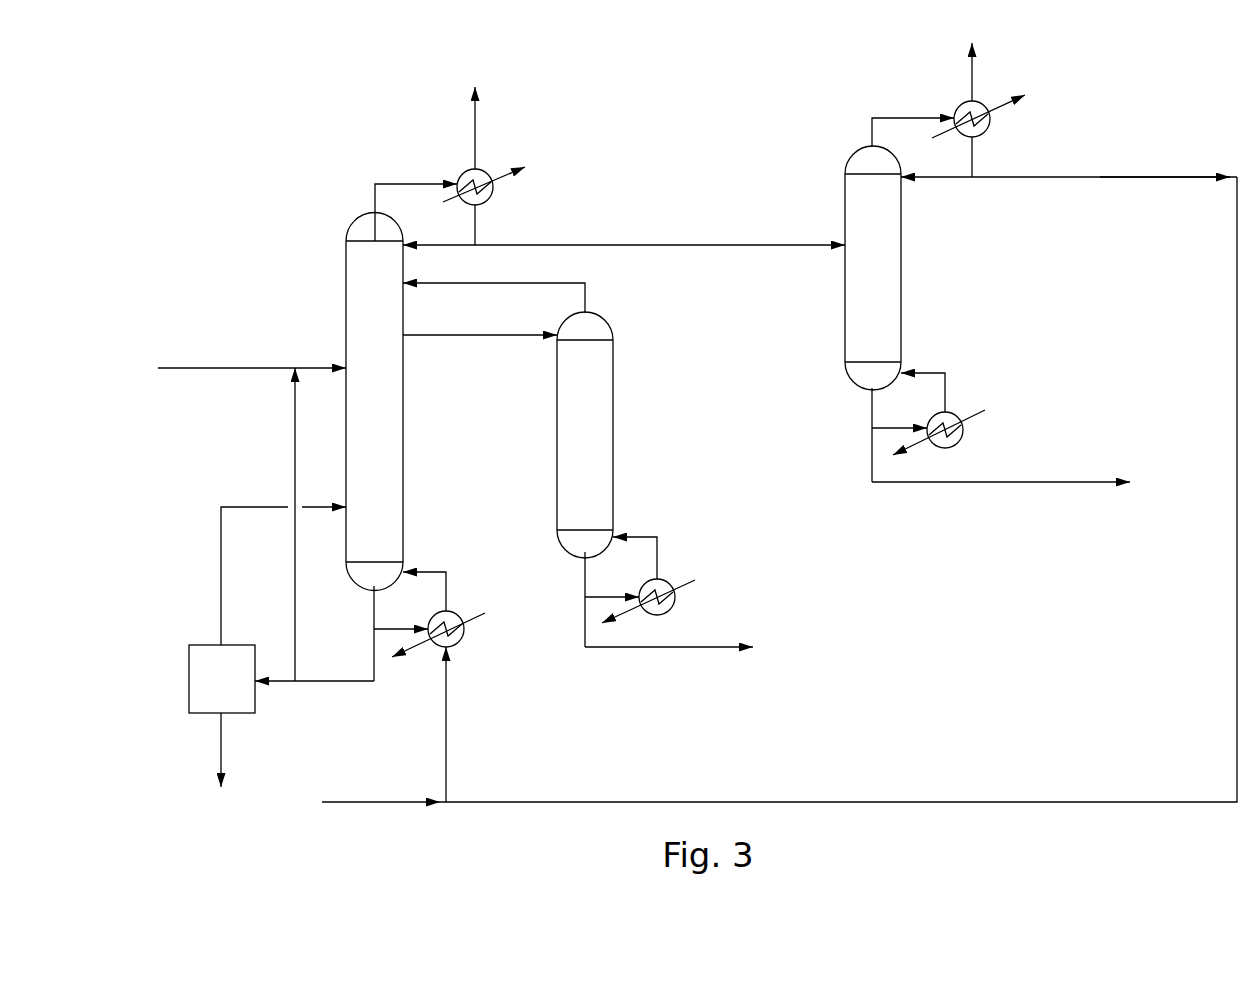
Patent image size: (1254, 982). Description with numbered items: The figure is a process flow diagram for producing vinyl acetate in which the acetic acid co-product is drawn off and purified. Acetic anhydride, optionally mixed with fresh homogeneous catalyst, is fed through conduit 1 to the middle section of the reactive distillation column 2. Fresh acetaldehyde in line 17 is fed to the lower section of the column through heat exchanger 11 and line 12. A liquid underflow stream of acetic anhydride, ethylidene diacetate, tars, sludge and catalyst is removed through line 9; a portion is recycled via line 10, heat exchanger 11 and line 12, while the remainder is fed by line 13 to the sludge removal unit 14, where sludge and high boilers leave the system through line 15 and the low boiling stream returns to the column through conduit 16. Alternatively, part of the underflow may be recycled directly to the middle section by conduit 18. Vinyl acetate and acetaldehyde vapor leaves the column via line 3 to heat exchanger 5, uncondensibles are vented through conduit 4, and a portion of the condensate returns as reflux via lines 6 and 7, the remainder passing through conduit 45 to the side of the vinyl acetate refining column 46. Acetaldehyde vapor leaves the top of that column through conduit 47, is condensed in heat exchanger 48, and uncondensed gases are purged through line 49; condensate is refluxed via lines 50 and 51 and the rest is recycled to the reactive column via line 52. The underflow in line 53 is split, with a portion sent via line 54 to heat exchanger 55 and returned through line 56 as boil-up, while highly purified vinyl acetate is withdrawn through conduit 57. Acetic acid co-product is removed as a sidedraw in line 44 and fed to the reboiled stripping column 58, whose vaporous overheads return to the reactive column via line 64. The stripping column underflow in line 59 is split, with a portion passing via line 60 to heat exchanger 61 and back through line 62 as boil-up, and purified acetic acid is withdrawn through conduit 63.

The conduit 1 is at (252, 351).
The reactive distillation column 2 is at (364, 405).
The line 3 is at (416, 197).
The conduit 4 is at (487, 128).
The heat exchanger 5 is at (484, 190).
The line 6 is at (463, 224).
The line 7 is at (439, 261).
The line 9 is at (362, 633).
The line 10 is at (401, 612).
The heat exchanger 11 is at (442, 634).
The line 12 is at (428, 575).
The line 13 is at (314, 696).
The sludge removal unit 14 is at (205, 692).
The line 15 is at (236, 750).
The conduit 16 is at (266, 576).
The line 17 is at (779, 504).
The conduit 18 is at (274, 524).
The line 44 is at (480, 351).
The conduit 45 is at (660, 229).
The vinyl acetate refining column 46 is at (857, 287).
The conduit 47 is at (913, 117).
The heat exchanger 48 is at (986, 116).
The line 49 is at (991, 72).
The line 50 is at (991, 157).
The line 51 is at (1069, 194).
The line 52 is at (1165, 194).
The line 53 is at (853, 435).
The line 54 is at (899, 410).
The heat exchanger 55 is at (947, 432).
The line 56 is at (943, 383).
The conduit 57 is at (1001, 500).
The reboiled stripping column 58 is at (567, 446).
The line 59 is at (565, 599).
The line 60 is at (612, 580).
The heat exchanger 61 is at (656, 601).
The line 62 is at (653, 553).
The conduit 63 is at (690, 645).
The line 64 is at (494, 299).